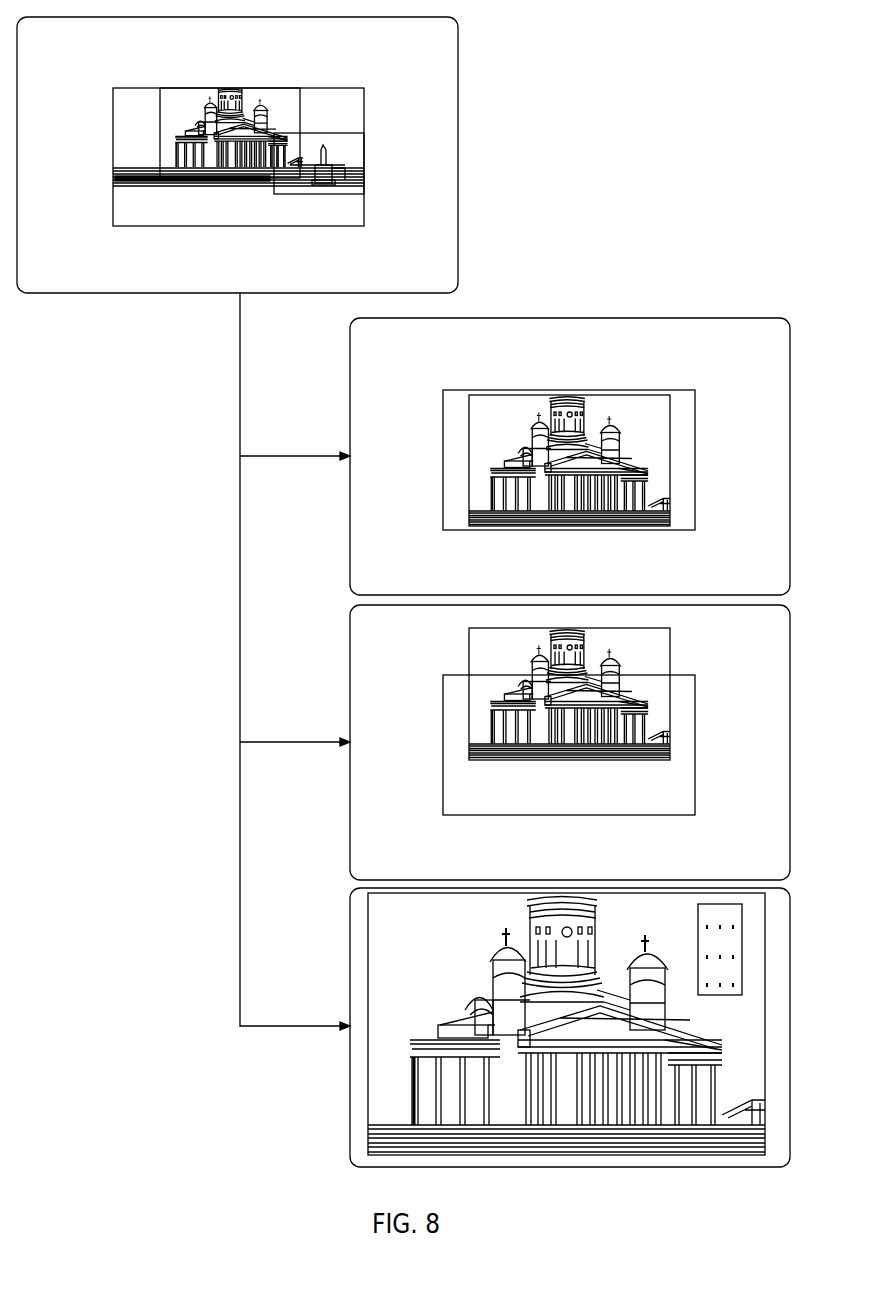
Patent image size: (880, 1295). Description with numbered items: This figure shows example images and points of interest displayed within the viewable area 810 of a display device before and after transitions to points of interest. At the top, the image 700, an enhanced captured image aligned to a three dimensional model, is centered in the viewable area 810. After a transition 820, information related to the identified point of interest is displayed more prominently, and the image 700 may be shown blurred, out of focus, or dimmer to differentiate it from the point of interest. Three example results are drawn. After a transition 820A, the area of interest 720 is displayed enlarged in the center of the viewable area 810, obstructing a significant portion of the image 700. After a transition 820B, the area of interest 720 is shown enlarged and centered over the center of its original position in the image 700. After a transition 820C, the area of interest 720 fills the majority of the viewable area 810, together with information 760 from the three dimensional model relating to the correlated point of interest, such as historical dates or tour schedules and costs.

The image 700 is at (300, 164).
The area of interest 720 is at (654, 421).
The information 760 is at (742, 950).
The viewable area 810 is at (458, 155).
The transition 820 is at (240, 412).
The transition 820A is at (290, 456).
The transition 820B is at (290, 742).
The transition 820C is at (290, 1027).